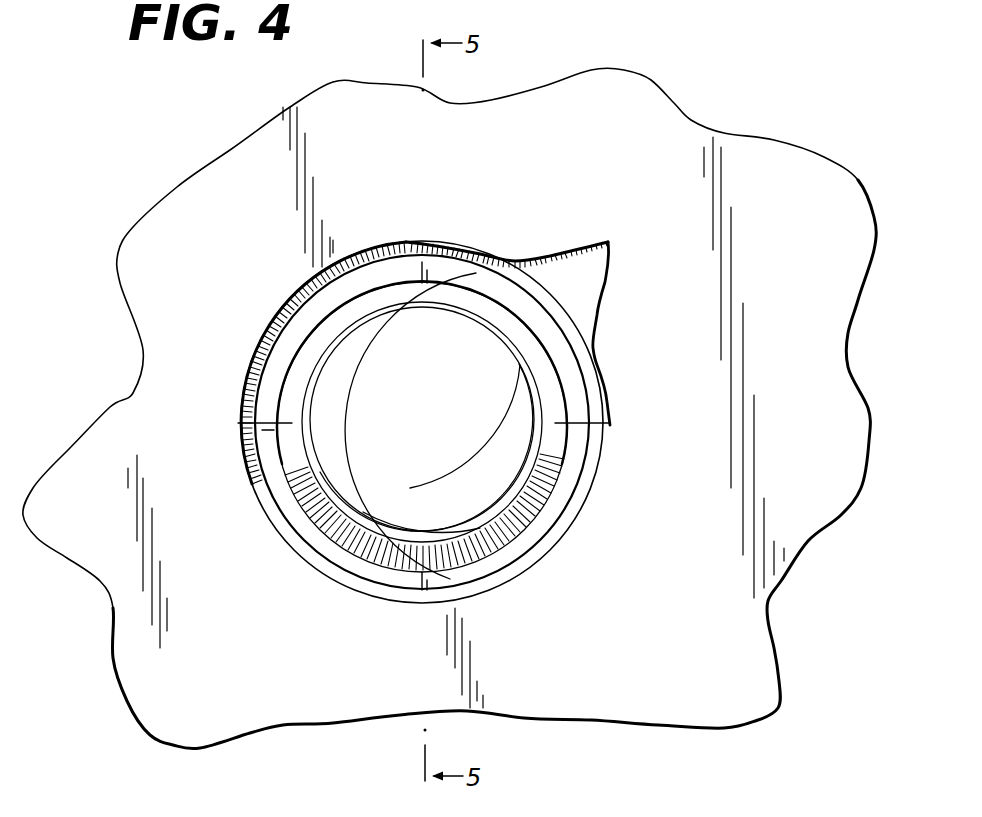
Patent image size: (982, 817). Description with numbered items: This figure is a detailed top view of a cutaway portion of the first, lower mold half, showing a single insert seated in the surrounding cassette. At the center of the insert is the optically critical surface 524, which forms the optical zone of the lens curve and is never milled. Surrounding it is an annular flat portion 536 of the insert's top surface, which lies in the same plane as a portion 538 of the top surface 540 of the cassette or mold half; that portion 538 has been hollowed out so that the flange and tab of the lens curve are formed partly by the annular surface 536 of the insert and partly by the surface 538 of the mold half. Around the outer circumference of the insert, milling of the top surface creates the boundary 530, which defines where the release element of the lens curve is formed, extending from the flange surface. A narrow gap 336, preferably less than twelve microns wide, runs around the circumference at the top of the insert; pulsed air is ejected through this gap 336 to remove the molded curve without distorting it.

The gap 336 is at (528, 292).
The optically critical surface 524 is at (353, 465).
The boundary 530 is at (313, 322).
The annular flat portion 536 is at (297, 377).
The portion of the top surface of the cassette 538 is at (594, 485).
The top surface of the cassette 540 is at (633, 668).